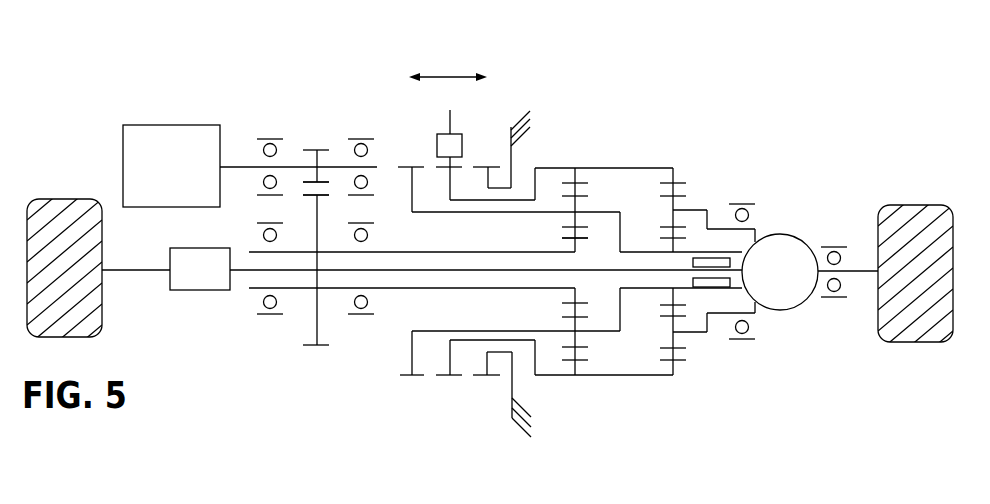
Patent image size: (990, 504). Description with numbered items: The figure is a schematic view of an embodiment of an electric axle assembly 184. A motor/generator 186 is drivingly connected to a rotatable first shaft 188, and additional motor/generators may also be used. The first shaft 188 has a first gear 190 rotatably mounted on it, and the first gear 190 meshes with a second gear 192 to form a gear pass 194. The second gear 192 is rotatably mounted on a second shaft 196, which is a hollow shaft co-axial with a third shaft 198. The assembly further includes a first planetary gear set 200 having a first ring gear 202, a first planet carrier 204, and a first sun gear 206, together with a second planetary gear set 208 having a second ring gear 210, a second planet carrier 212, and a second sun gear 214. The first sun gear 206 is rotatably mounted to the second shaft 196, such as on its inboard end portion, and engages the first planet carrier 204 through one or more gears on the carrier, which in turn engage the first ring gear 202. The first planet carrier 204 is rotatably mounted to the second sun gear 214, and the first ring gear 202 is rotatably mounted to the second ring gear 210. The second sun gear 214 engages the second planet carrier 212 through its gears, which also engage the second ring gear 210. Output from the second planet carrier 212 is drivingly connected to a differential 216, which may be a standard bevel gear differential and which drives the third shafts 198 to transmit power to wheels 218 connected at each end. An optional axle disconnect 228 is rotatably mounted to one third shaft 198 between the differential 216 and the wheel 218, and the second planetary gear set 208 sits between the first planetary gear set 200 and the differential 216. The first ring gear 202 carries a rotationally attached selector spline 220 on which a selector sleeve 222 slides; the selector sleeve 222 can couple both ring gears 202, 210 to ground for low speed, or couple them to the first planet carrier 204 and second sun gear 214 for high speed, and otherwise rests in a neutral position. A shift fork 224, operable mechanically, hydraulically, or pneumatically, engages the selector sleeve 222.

The electric axle assembly 184 is at (299, 88).
The motor/generator 186 is at (173, 125).
The first shaft 188 is at (240, 167).
The first gear 190 is at (312, 150).
The second gear 192 is at (322, 345).
The gear pass 194 is at (296, 198).
The second shaft 196 is at (257, 289).
The third shaft 198 is at (240, 252).
The first planetary gear set 200 is at (604, 171).
The first ring gear 202 is at (575, 168).
The first planet carrier 204 is at (605, 332).
The first sun gear 206 is at (575, 249).
The second planetary gear set 208 is at (721, 180).
The second ring gear 210 is at (702, 158).
The second planet carrier 212 is at (693, 210).
The second sun gear 214 is at (672, 248).
The differential 216 is at (790, 236).
The wheel 218 is at (60, 200).
The selector spline 220 is at (445, 186).
The selector sleeve 222 is at (462, 145).
The shift fork 224 is at (450, 112).
The axle disconnect 228 is at (200, 290).